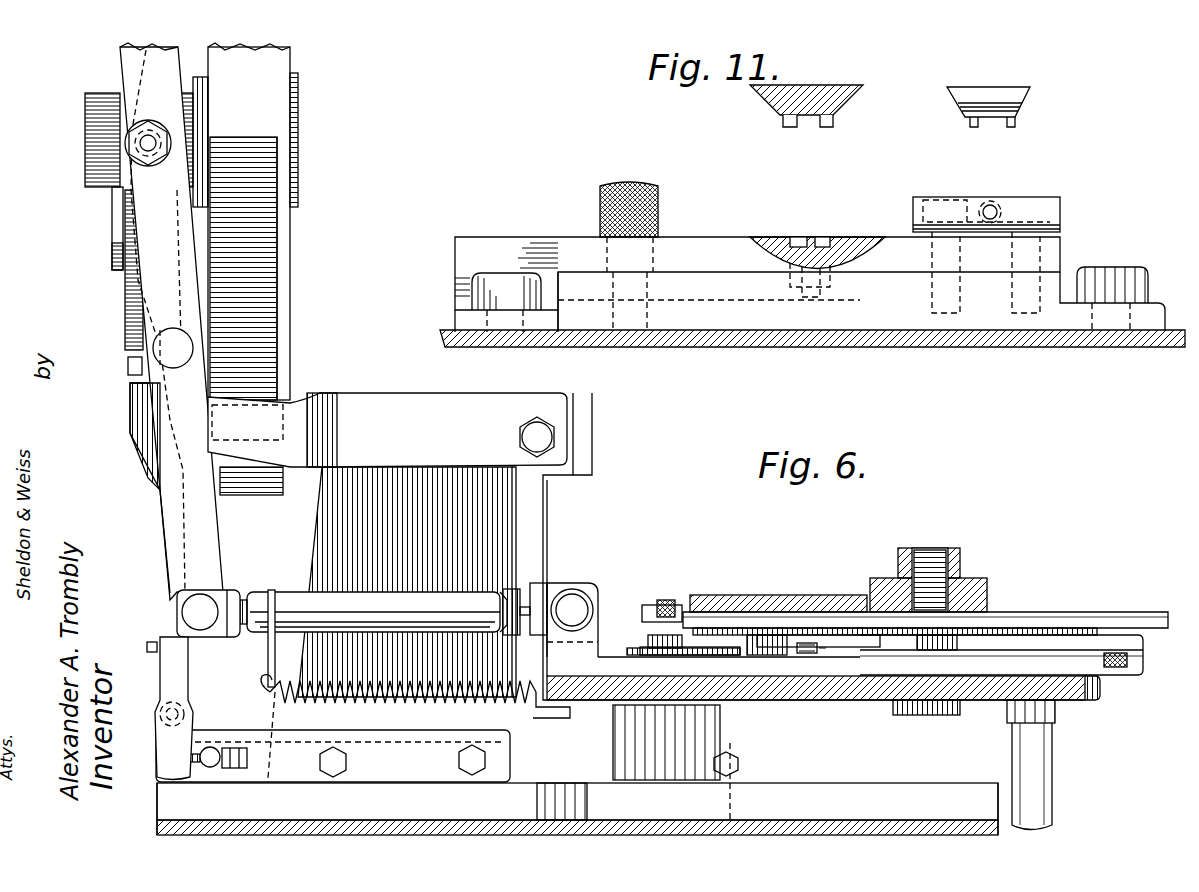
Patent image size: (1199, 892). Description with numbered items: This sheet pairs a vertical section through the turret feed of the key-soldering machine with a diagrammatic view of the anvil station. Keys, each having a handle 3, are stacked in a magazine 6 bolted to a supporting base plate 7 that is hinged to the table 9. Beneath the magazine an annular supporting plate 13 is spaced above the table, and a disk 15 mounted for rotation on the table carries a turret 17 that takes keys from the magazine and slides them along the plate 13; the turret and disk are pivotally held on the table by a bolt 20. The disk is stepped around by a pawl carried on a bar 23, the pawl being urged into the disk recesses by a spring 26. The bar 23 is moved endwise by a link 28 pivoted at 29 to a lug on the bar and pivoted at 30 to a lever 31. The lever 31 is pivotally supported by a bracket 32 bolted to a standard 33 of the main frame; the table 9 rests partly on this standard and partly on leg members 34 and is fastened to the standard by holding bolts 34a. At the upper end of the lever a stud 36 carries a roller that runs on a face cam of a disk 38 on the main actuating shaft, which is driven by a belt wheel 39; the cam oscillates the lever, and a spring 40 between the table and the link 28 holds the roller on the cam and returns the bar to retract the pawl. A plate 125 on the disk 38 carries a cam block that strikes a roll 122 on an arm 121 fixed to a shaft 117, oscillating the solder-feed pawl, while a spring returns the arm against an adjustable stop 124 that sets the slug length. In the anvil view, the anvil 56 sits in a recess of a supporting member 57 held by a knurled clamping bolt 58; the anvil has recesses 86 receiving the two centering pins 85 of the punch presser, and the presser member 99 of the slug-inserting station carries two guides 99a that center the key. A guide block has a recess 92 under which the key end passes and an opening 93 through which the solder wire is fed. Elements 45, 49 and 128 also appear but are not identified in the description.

In FIG. 6, the handle 3 is at (937, 553).
In FIG. 6, the magazine 6 is at (958, 556).
In FIG. 6, the supporting base plate 7 is at (726, 604).
In FIG. 6, the table 9 is at (848, 702).
In FIG. 11, the table 9 is at (886, 345).
In FIG. 6, the annular plate 13 is at (830, 625).
In FIG. 6, the disk 15 is at (907, 636).
In FIG. 6, the turret 17 is at (1015, 613).
In FIG. 6, the bolt 20 is at (927, 708).
In FIG. 6, the bar 23 is at (1029, 662).
In FIG. 6, the spring 26 is at (1118, 668).
In FIG. 6, the link 28 is at (366, 582).
In FIG. 6, the pivot 29 is at (573, 604).
In FIG. 6, the pivot 30 is at (204, 610).
In FIG. 6, the lever 31 is at (198, 515).
In FIG. 6, the bracket 32 is at (262, 418).
In FIG. 6, the standard 33 is at (407, 582).
In FIG. 6, the leg members 34 is at (1033, 749).
In FIG. 6, the holding bolts 34a is at (655, 643).
In FIG. 6, the stud 36 is at (140, 145).
In FIG. 6, the disk 38 is at (128, 71).
In FIG. 6, the belt wheel 39 is at (245, 269).
In FIG. 6, the spring 40 is at (412, 706).
In FIG. 6, the block 45 is at (773, 643).
In FIG. 6, the spring 49 is at (805, 653).
In FIG. 11, the anvil 56 is at (688, 252).
In FIG. 11, the supporting member 57 is at (861, 298).
In FIG. 11, the knurled clamping bolt 58 is at (627, 184).
In FIG. 11, the centering pins 85 is at (799, 118).
In FIG. 11, the recesses 86 is at (823, 236).
In FIG. 11, the recess 92 is at (1062, 226).
In FIG. 11, the opening 93 is at (993, 212).
In FIG. 11, the presser member 99 is at (993, 96).
In FIG. 11, the guides 99a is at (974, 121).
In FIG. 6, the shaft 117 is at (180, 710).
In FIG. 6, the arm 121 is at (142, 425).
In FIG. 6, the roll 122 is at (138, 368).
In FIG. 6, the adjustable stop 124 is at (197, 770).
In FIG. 6, the plate 125 is at (120, 218).
In FIG. 6, the stop 128 is at (150, 646).